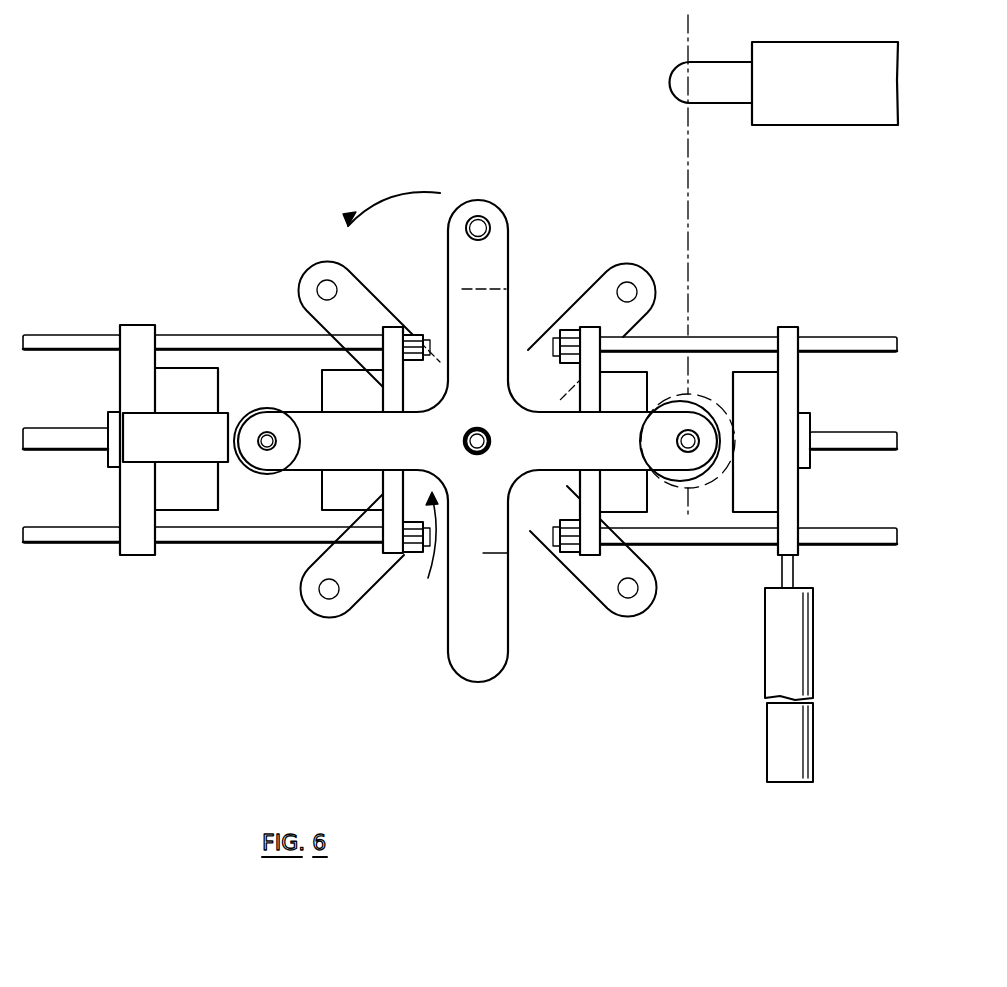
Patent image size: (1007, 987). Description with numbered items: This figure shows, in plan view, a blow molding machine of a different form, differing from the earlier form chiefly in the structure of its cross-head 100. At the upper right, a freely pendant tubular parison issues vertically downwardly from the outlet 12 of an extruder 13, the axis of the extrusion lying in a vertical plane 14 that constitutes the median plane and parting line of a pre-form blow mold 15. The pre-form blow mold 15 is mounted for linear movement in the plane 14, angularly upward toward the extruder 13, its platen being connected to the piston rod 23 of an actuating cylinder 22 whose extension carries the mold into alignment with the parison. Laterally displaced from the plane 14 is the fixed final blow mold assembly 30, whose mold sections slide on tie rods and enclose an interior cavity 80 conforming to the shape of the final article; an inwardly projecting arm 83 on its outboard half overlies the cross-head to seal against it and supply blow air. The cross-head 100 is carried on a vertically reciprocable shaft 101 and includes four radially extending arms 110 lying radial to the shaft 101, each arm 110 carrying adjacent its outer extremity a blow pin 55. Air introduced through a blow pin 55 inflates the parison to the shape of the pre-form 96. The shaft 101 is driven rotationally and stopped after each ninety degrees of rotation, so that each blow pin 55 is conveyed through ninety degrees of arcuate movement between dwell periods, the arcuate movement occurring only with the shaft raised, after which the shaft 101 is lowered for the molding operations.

The outlet 12 is at (716, 73).
The extruder 13 is at (805, 48).
The vertical plane 14 is at (688, 151).
The pre-form blow mold 15 is at (748, 326).
The actuating cylinder 22 is at (775, 679).
The piston rod 23 is at (782, 574).
The final blow mold assembly 30 is at (184, 320).
The blow pin 55 is at (481, 214).
The interior cavity 80 is at (262, 482).
The arm 83 is at (190, 452).
The pre-form 96 is at (700, 482).
The cross-head 100 is at (417, 548).
The shaft 101 is at (469, 427).
The arms 110 is at (358, 292).